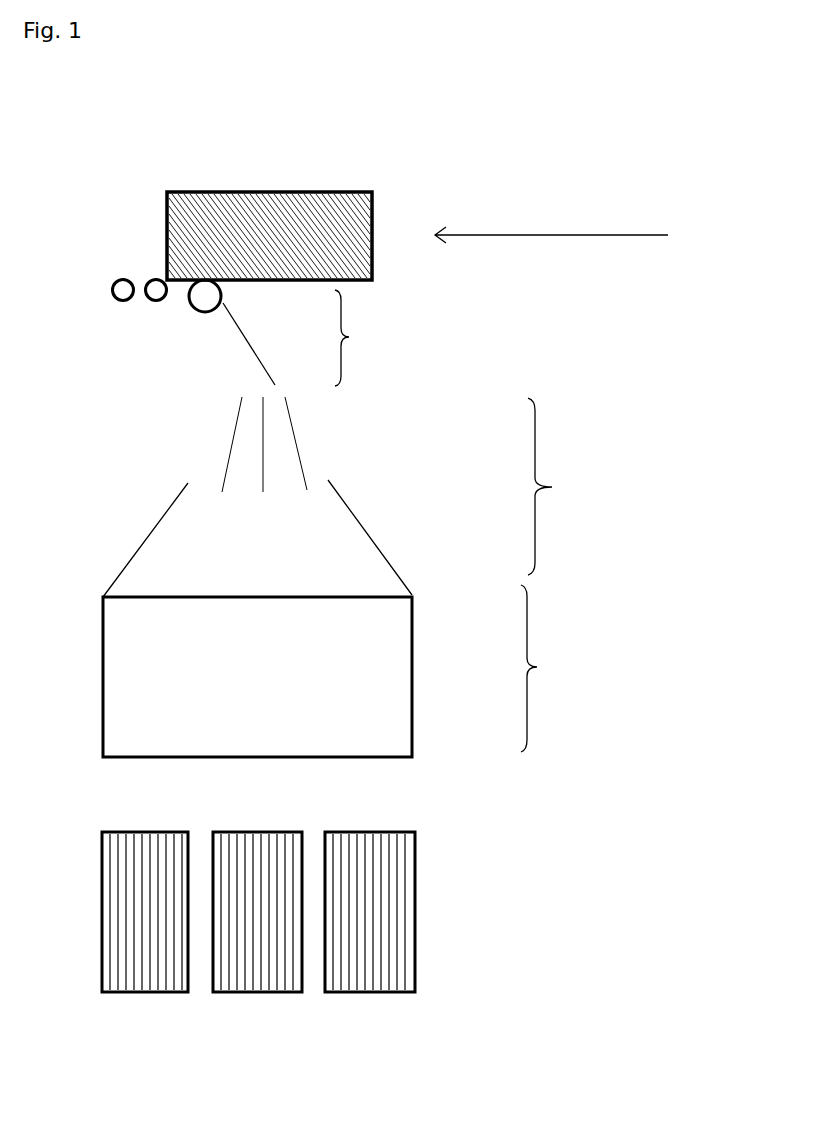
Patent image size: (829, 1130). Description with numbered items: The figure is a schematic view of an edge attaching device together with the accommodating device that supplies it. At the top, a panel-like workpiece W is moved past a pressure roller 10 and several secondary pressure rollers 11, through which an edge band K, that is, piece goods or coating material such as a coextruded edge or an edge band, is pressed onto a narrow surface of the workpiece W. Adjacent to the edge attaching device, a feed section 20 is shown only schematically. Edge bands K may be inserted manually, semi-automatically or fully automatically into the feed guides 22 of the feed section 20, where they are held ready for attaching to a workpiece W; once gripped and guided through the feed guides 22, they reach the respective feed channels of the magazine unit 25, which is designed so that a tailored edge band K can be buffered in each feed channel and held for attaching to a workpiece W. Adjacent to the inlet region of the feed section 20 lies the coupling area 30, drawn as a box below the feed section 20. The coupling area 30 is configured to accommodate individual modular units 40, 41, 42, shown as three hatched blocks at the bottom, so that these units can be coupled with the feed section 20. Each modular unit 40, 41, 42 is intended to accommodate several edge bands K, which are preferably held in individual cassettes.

The workpiece W is at (283, 207).
The secondary pressure rollers 11 is at (156, 299).
The pressure roller 10 is at (205, 302).
The edge band K is at (238, 322).
The magazine unit 25 is at (366, 338).
The feed guides 22 is at (213, 442).
The feed section 20 is at (558, 486).
The coupling area 30 is at (348, 671).
The modular unit 40 is at (130, 970).
The modular unit 41 is at (255, 970).
The modular unit 42 is at (378, 970).